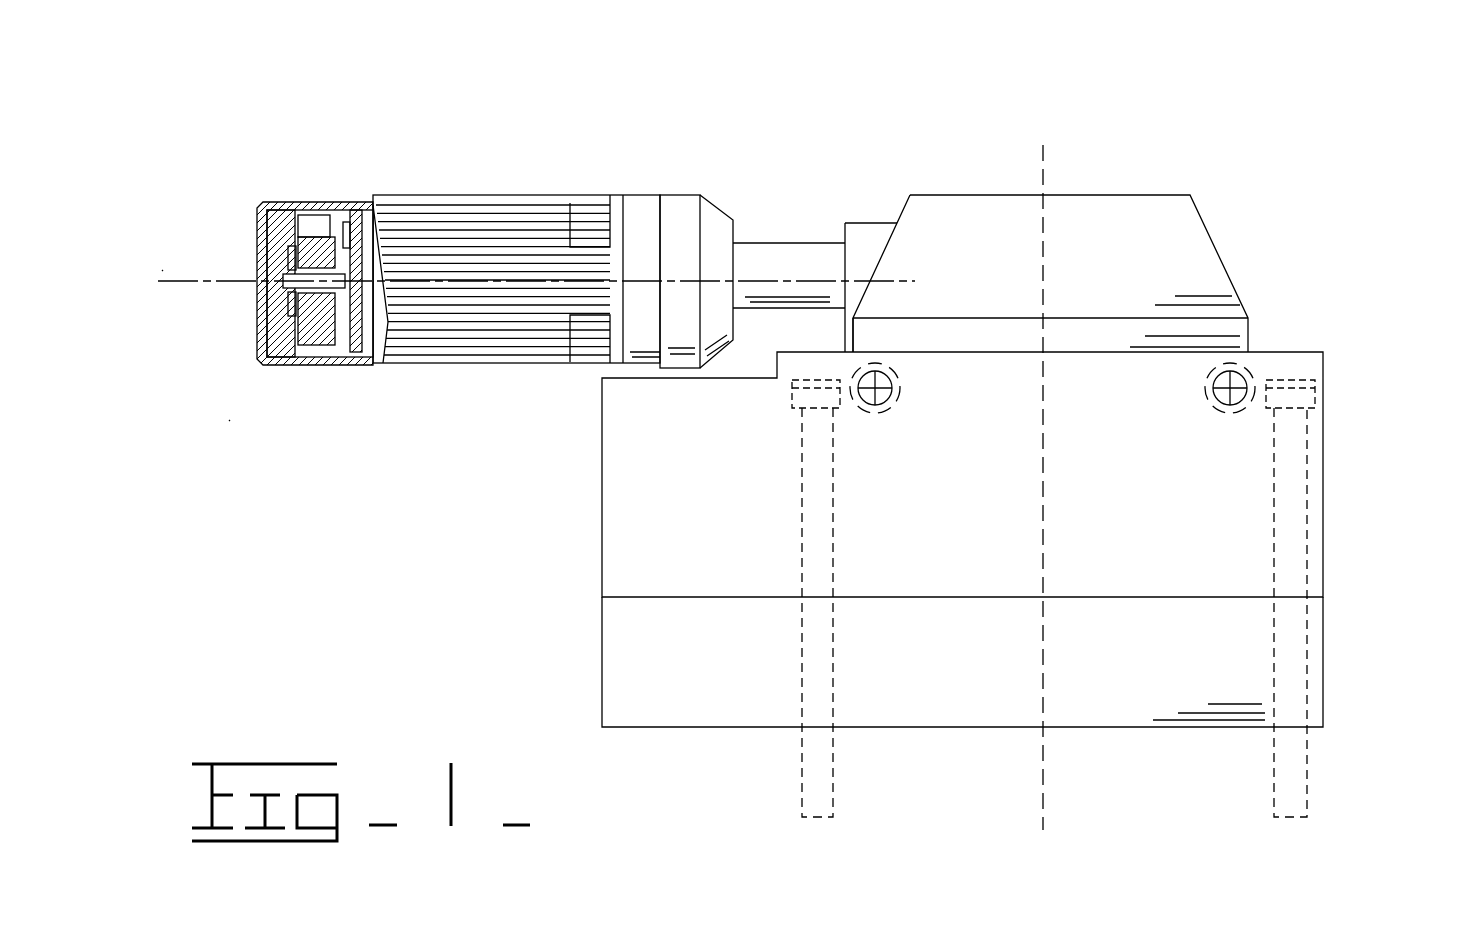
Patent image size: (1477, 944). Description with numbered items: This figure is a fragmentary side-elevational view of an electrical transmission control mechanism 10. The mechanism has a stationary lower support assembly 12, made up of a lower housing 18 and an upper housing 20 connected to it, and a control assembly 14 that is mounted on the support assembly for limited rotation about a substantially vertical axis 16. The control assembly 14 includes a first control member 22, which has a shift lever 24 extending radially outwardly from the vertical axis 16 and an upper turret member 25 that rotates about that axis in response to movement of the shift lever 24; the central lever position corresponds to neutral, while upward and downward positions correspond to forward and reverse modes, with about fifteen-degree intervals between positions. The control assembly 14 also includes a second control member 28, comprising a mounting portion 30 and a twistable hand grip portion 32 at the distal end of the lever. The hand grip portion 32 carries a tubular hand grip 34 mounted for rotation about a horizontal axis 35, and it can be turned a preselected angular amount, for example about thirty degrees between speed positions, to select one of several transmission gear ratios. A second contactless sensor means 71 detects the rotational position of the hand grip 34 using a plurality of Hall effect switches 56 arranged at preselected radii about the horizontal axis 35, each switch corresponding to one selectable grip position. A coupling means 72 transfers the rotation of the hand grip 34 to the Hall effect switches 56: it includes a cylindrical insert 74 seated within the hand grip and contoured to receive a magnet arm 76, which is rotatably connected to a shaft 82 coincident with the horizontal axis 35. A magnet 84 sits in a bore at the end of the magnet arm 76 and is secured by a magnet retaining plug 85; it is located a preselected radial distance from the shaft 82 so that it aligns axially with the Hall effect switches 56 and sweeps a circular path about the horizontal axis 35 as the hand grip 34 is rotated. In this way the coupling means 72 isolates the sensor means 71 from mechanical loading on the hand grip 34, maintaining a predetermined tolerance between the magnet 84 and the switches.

The transmission control mechanism 10 is at (428, 90).
The lower support assembly 12 is at (1365, 590).
The control assembly 14 is at (1003, 110).
The vertical axis 16 is at (1043, 145).
The lower housing 18 is at (602, 660).
The upper housing 20 is at (602, 470).
The first control member 22 is at (890, 178).
The shift lever 24 is at (767, 243).
The upper turret member 25 is at (940, 197).
The second control member 28 is at (198, 128).
The mounting portion 30 is at (652, 183).
The hand grip portion 32 is at (270, 92).
The tubular hand grip 34 is at (394, 200).
The horizontal axis 35 is at (193, 282).
The Hall effect switches 56 is at (346, 205).
The second contactless sensor means 71 is at (222, 397).
The coupling means 72 is at (228, 90).
The cylindrical insert 74 is at (265, 215).
The magnet arm 76 is at (330, 300).
The shaft 82 is at (327, 287).
The magnet 84 is at (318, 205).
The magnet retaining plug 85 is at (310, 205).